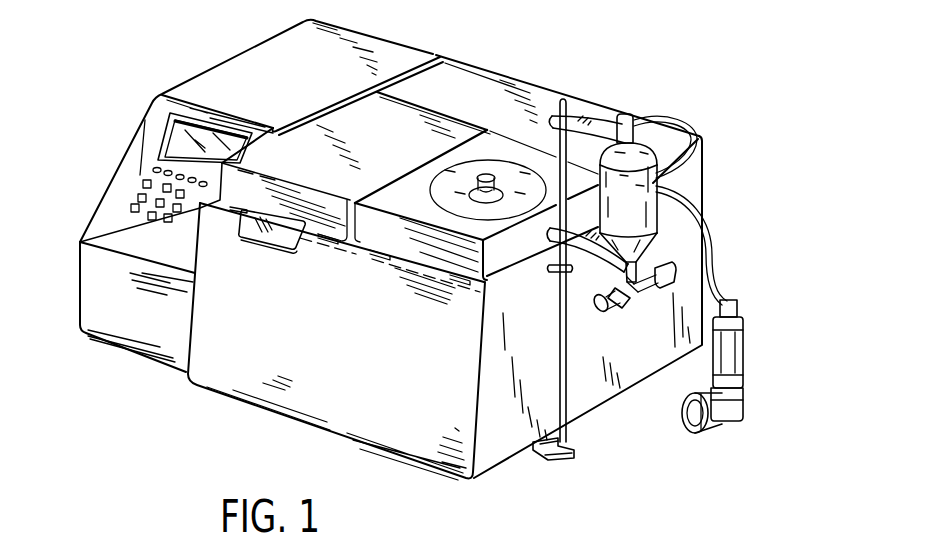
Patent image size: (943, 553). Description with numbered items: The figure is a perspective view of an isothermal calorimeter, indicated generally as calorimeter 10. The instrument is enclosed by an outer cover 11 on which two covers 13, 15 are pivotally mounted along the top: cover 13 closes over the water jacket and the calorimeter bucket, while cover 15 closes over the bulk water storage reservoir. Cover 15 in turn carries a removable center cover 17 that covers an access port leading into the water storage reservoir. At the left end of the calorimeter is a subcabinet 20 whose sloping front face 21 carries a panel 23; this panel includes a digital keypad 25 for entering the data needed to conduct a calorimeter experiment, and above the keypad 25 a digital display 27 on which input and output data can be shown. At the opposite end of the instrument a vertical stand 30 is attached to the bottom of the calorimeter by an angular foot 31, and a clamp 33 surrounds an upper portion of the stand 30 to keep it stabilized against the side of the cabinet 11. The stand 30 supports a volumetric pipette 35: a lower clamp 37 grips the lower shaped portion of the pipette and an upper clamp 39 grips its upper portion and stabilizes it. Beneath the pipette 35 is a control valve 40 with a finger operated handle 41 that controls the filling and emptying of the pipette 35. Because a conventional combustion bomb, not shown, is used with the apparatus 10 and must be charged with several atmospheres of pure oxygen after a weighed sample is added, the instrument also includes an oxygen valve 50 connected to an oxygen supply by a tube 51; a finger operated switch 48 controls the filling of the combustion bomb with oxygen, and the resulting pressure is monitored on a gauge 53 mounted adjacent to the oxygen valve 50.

The isothermal calorimeter 10 is at (540, 74).
The outer cover 11 is at (321, 367).
The cover 13 is at (435, 122).
The cover 15 is at (505, 140).
The center cover 17 is at (447, 177).
The subcabinet 20 is at (213, 97).
The sloping front face 21 is at (107, 217).
The panel 23 is at (140, 173).
The digital keypad 25 is at (140, 197).
The digital display 27 is at (177, 137).
The stand 30 is at (562, 350).
The angular foot 31 is at (547, 450).
The clamp 33 is at (548, 269).
The volumetric pipette 35 is at (655, 183).
The lower clamp 37 is at (550, 230).
The upper clamp 39 is at (597, 123).
The control valve 40 is at (637, 299).
The finger operated handle 41 is at (598, 305).
The finger operated switch 48 is at (723, 348).
The oxygen valve 50 is at (745, 377).
The tube 51 is at (720, 266).
The gauge 53 is at (687, 424).